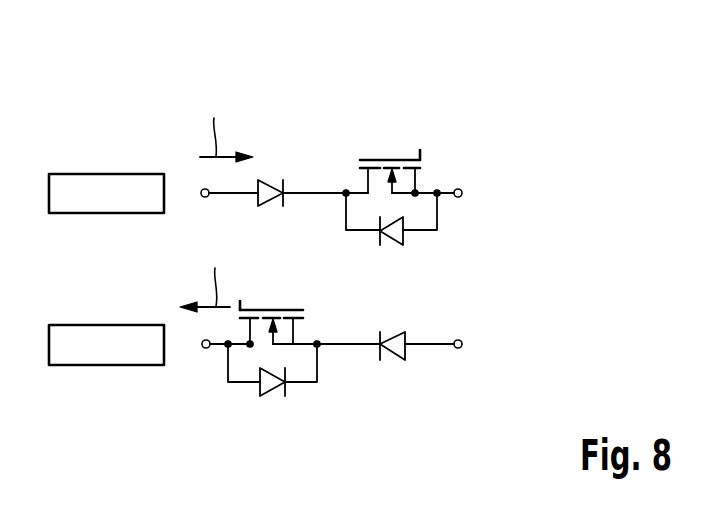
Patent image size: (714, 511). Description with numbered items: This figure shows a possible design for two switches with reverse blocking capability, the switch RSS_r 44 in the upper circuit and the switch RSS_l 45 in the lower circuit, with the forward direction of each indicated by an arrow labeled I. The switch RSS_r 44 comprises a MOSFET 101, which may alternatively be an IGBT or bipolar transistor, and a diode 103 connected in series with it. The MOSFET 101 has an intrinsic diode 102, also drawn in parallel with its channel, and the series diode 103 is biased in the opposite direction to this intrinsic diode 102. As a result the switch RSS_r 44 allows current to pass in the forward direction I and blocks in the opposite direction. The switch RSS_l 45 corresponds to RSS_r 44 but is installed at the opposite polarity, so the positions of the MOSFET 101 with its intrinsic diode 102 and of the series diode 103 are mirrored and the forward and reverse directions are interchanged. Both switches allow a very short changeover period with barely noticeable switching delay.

The switch with reverse blocking capability RSS_r 44 is at (106, 174).
The switch with reverse blocking capability RSS_l 45 is at (106, 366).
The MOSFET 101 is at (392, 159).
The intrinsic diode 102 is at (392, 246).
The diode 103 is at (273, 179).